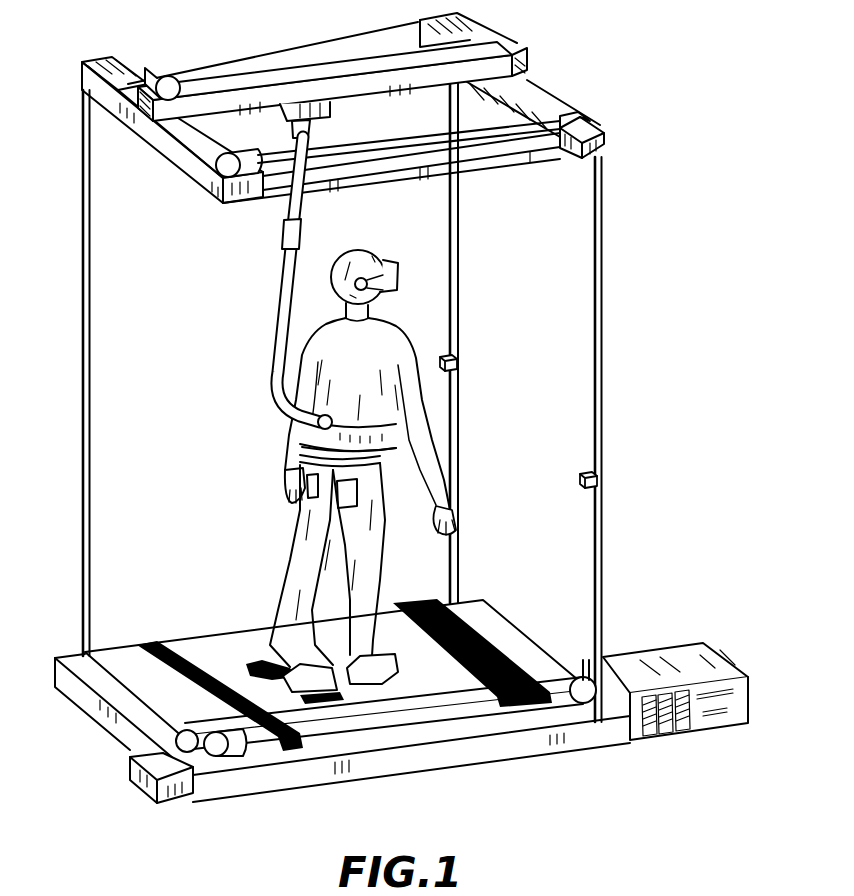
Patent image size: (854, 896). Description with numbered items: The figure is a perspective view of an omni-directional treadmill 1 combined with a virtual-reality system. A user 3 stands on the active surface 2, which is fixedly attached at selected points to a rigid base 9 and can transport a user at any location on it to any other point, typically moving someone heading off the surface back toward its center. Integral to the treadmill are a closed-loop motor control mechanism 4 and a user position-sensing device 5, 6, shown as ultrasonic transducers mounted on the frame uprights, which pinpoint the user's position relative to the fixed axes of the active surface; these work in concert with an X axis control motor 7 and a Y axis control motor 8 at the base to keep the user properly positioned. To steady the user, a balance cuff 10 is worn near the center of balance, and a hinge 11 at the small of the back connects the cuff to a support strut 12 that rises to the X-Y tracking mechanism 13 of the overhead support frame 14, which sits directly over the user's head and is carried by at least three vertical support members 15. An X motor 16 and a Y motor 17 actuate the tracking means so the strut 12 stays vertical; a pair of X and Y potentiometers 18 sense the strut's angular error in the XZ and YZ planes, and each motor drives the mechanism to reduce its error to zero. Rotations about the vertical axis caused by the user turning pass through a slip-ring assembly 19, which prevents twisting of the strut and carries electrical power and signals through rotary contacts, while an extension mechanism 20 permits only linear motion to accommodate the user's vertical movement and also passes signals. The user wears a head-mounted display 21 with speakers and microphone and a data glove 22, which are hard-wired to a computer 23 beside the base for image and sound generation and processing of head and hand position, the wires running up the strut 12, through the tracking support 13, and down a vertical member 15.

The omni-directional treadmill 1 is at (487, 753).
The active surface 2 is at (210, 652).
The user 3 is at (317, 518).
The closed-loop motor control mechanism 4 is at (142, 786).
The user position-sensing device 5 is at (598, 481).
The user position-sensing device 6 is at (458, 364).
The X axis control motor 7 is at (230, 754).
The Y axis control motor 8 is at (588, 708).
The rigid base 9 is at (107, 713).
The balance cuff 10 is at (378, 447).
The hinge 11 is at (318, 428).
The support strut 12 is at (283, 283).
The X-Y tracking mechanism 13 is at (517, 52).
The support frame 14 is at (533, 160).
The vertical support member 15 is at (600, 394).
The X motor 16 is at (230, 166).
The Y motor 17 is at (160, 74).
The X and Y potentiometers 18 is at (328, 110).
The slip-ring assembly 19 is at (311, 131).
The extension mechanism 20 is at (292, 240).
The head-mounted display 21 is at (398, 280).
The data glove 22 is at (457, 519).
The computer 23 is at (670, 667).